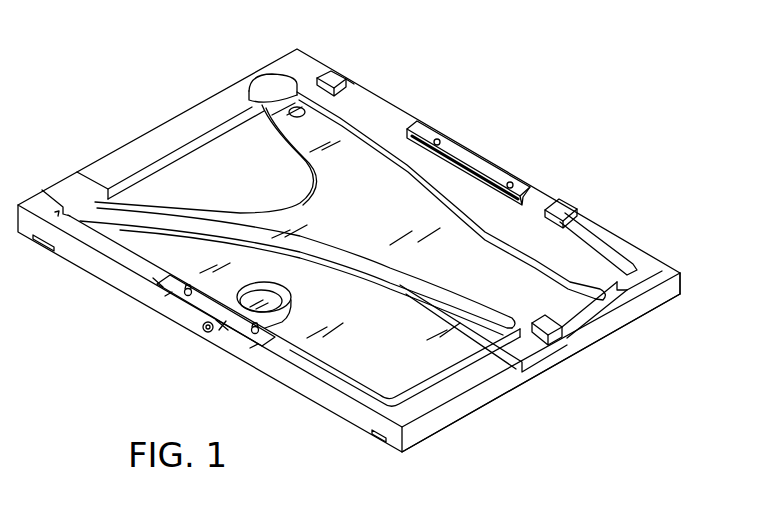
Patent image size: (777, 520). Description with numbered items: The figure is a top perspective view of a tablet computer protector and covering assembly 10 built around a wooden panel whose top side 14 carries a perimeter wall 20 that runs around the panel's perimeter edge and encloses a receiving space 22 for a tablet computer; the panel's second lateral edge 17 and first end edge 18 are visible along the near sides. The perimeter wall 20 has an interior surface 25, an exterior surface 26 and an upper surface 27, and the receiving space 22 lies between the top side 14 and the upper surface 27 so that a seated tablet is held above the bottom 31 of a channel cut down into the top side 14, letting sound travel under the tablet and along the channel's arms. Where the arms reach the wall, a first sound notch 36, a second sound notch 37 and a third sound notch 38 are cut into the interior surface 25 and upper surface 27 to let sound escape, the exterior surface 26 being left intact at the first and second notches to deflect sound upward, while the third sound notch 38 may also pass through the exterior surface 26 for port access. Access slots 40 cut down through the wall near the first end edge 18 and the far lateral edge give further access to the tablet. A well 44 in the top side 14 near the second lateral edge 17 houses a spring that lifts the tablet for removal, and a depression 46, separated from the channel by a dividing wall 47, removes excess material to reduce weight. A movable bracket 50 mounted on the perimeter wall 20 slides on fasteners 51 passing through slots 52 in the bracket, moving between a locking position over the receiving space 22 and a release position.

The tablet computer protector and covering assembly 10 is at (545, 122).
The top side 14 is at (556, 260).
The second lateral edge 17 is at (352, 421).
The first end edge 18 is at (480, 410).
The perimeter wall 20 is at (678, 275).
The receiving space 22 is at (197, 180).
The interior surface 25 is at (328, 74).
The exterior surface 26 is at (349, 87).
The upper surface 27 is at (297, 64).
The bottom 31 is at (363, 225).
The first sound notch 36 is at (613, 281).
The second sound notch 37 is at (247, 80).
The third sound notch 38 is at (78, 187).
The access slots 40 is at (380, 117).
The well 44 is at (215, 300).
The depression 46 is at (425, 358).
The dividing wall 47 is at (390, 283).
The movable bracket 50 is at (207, 333).
The fasteners 51 is at (170, 293).
The slots 52 is at (180, 290).